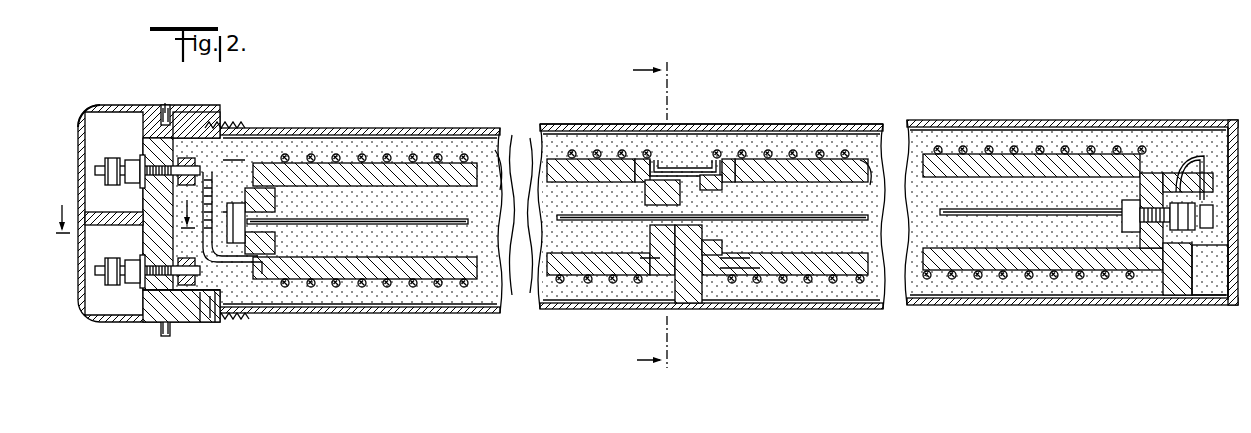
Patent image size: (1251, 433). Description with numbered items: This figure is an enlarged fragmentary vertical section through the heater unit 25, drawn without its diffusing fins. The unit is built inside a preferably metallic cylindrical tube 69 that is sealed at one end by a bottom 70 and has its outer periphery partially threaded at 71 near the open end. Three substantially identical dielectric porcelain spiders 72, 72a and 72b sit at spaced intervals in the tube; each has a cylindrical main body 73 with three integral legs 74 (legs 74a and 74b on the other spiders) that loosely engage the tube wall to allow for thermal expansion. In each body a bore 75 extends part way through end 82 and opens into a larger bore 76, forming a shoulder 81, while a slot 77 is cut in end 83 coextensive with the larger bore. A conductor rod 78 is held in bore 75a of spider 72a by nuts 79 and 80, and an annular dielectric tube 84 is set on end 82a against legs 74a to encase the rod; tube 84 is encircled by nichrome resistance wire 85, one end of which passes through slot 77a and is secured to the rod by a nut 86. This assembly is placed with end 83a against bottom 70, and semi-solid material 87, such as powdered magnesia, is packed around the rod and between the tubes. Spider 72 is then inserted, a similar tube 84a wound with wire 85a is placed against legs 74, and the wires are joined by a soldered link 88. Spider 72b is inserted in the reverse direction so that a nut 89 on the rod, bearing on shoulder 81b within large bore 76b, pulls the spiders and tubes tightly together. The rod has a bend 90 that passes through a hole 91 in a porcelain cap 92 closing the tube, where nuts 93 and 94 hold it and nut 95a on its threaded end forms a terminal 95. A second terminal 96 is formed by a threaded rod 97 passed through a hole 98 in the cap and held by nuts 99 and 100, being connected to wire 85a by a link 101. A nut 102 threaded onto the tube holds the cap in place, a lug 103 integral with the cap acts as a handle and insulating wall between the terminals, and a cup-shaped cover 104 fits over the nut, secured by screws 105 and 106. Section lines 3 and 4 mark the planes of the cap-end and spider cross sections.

The heater unit 25 is at (813, 111).
The tube 69 is at (493, 313).
The bottom 70 is at (1210, 272).
The threaded portion 71 is at (234, 186).
The spider 72 is at (653, 252).
The spider 72a is at (1136, 248).
The spider 72b is at (272, 192).
The main body 73 is at (673, 262).
The legs 74 is at (662, 135).
The legs 74a is at (1180, 298).
The legs 74b is at (243, 152).
The bore 75 is at (704, 252).
The bore 75a is at (1158, 183).
The larger bore 76 is at (714, 200).
The large bore 76b is at (238, 286).
The slot 77 is at (705, 190).
The slot 77a is at (1202, 170).
The conductor rod 78 is at (1005, 217).
The nut 79 is at (1125, 200).
The nut 80 is at (1190, 200).
The shoulder 81 is at (712, 262).
The shoulder 81b is at (265, 274).
The end 82 is at (645, 180).
The end 82a is at (1150, 172).
The end 83 is at (745, 265).
The end 83a is at (1190, 268).
The annular tube 84 is at (862, 167).
The tube 84a is at (499, 150).
The resistance wire 85 is at (834, 283).
The wire 85a is at (400, 155).
The nut 86 is at (1229, 124).
The semi-solid material 87 is at (565, 198).
The link 88 is at (680, 165).
The nut 89 is at (236, 124).
The bend 90 is at (212, 176).
The hole 91 is at (158, 186).
The cap 92 is at (168, 318).
The nut 93 is at (187, 158).
The nut 94 is at (134, 160).
The terminal 95 is at (99, 151).
The nut 95a is at (113, 160).
The second terminal 96 is at (99, 286).
The threaded rod 97 is at (160, 302).
The hole 98 is at (165, 262).
The nut 99 is at (205, 323).
The nut 100 is at (134, 278).
The link 101 is at (224, 312).
The nut 102 is at (216, 326).
The lug 103 is at (100, 226).
The cup-shaped cover 104 is at (98, 108).
The screw 105 is at (165, 104).
The screw 106 is at (170, 337).
The section line 3- 3 is at (125, 227).
The section line 4- 4 is at (652, 214).